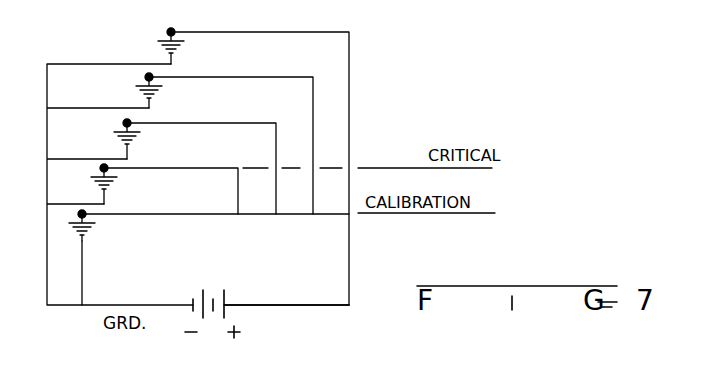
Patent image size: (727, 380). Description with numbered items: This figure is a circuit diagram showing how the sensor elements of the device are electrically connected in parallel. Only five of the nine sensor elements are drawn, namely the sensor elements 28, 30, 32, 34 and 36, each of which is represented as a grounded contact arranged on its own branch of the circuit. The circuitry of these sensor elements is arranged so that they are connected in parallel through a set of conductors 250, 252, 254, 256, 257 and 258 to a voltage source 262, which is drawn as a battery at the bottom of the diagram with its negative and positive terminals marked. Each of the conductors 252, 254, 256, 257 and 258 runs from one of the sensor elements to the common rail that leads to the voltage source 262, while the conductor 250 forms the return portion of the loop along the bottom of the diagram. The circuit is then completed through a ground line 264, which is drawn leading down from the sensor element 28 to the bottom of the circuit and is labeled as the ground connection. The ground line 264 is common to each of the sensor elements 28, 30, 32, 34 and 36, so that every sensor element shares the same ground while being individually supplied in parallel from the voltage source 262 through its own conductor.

The sensor element 28 is at (83, 213).
The sensor element 30 is at (104, 170).
The sensor element 32 is at (127, 125).
The sensor element 34 is at (149, 79).
The sensor element 36 is at (170, 31).
The conductor 250 is at (279, 305).
The conductor 252 is at (190, 214).
The conductor 254 is at (150, 168).
The conductor 256 is at (197, 123).
The conductor 257 is at (224, 77).
The conductor 258 is at (258, 32).
The voltage source 262 is at (213, 292).
The ground line 264 is at (82, 278).